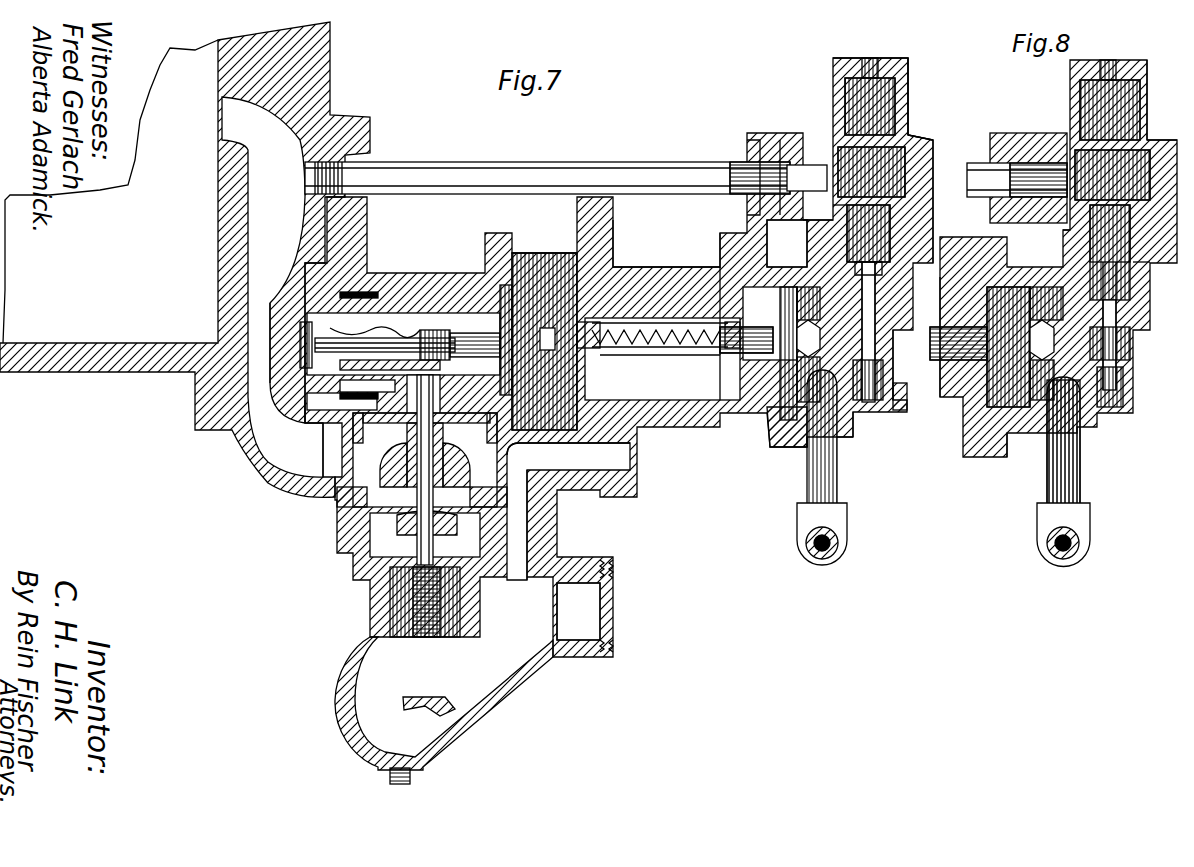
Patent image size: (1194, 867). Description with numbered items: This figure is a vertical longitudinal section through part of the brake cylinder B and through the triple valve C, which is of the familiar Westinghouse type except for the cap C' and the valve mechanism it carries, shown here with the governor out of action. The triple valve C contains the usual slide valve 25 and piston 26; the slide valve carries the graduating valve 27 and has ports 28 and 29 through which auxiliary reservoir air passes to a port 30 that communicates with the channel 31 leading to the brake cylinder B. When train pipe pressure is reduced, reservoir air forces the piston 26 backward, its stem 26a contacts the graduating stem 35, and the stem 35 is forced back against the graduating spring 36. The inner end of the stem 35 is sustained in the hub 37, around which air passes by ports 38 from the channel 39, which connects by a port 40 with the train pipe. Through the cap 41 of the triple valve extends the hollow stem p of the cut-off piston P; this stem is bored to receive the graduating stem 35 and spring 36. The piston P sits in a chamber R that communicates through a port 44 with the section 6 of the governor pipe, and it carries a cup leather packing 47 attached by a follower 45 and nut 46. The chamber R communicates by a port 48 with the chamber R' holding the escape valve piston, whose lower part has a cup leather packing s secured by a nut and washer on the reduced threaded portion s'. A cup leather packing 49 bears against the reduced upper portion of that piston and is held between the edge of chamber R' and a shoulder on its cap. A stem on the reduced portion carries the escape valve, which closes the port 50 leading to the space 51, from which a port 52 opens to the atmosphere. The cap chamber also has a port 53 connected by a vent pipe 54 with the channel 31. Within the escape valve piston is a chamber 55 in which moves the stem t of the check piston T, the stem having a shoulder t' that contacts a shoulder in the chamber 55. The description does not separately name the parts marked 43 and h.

In FIG. 7, the brake cylinder B is at (150, 252).
In FIG. 7, the triple valve C is at (619, 357).
In FIG. 7, the cap C' is at (666, 357).
In FIG. 7, the section of the governor pipe 6 is at (836, 495).
In FIG. 8, the section of the governor pipe 6 is at (1064, 472).
In FIG. 7, the slide valve 25 is at (335, 340).
In FIG. 7, the piston 26 is at (520, 372).
In FIG. 7, the stem 26a is at (558, 339).
In FIG. 7, the graduating valve 27 is at (438, 340).
In FIG. 7, the port 28 is at (335, 432).
In FIG. 7, the port 29 is at (330, 408).
In FIG. 7, the port 30 is at (370, 348).
In FIG. 7, the channel 31 is at (280, 372).
In FIG. 7, the graduating stem 35 is at (580, 350).
In FIG. 7, the graduating spring 36 is at (650, 350).
In FIG. 7, the hub 37 is at (612, 350).
In FIG. 7, the ports 38 is at (595, 400).
In FIG. 7, the channel 39 is at (568, 511).
In FIG. 7, the port 40 is at (578, 611).
In FIG. 7, the cap of the triple valve 41 is at (700, 400).
In FIG. 8, the cap of the triple valve 41 is at (960, 400).
In FIG. 7, the flange 43 is at (850, 420).
In FIG. 7, the port 44 is at (852, 437).
In FIG. 8, the port 44 is at (1030, 440).
In FIG. 7, the follower 45 is at (780, 450).
In FIG. 7, the nut 46 is at (808, 338).
In FIG. 8, the nut 46 is at (1042, 340).
In FIG. 7, the cup leather packing 47 is at (790, 280).
In FIG. 8, the cup leather packing 47 is at (1036, 304).
In FIG. 7, the port 48 is at (808, 379).
In FIG. 8, the port 48 is at (1042, 380).
In FIG. 7, the cup leather packing 49 is at (905, 218).
In FIG. 8, the cup leather packing 49 is at (1070, 225).
In FIG. 7, the port 50 is at (905, 145).
In FIG. 8, the port 50 is at (1150, 145).
In FIG. 7, the space 51 is at (870, 106).
In FIG. 8, the space 51 is at (1078, 82).
In FIG. 7, the port 52 is at (875, 58).
In FIG. 8, the port 52 is at (1108, 60).
In FIG. 7, the port 53 is at (800, 160).
In FIG. 8, the port 53 is at (1038, 180).
In FIG. 7, the vent pipe 54 is at (547, 167).
In FIG. 8, the vent pipe 54 is at (1007, 180).
In FIG. 7, the chamber 55 is at (900, 280).
In FIG. 7, the chamber h is at (660, 377).
In FIG. 7, the hollow stem p is at (746, 340).
In FIG. 8, the hollow stem p is at (958, 343).
In FIG. 7, the cut-off piston P is at (772, 445).
In FIG. 8, the cut-off piston P is at (1008, 347).
In FIG. 7, the chamber R is at (857, 265).
In FIG. 8, the chamber R is at (1065, 284).
In FIG. 7, the chamber R' is at (928, 312).
In FIG. 7, the check piston T is at (901, 396).
In FIG. 8, the check piston T is at (1125, 385).
In FIG. 7, the cup leather packing s is at (923, 302).
In FIG. 8, the cup leather packing s is at (1134, 285).
In FIG. 7, the reduced threaded portion s' is at (884, 291).
In FIG. 8, the reduced threaded portion s' is at (1100, 256).
In FIG. 7, the stem t is at (888, 343).
In FIG. 8, the stem t is at (1131, 345).
In FIG. 7, the shoulder t' is at (858, 237).